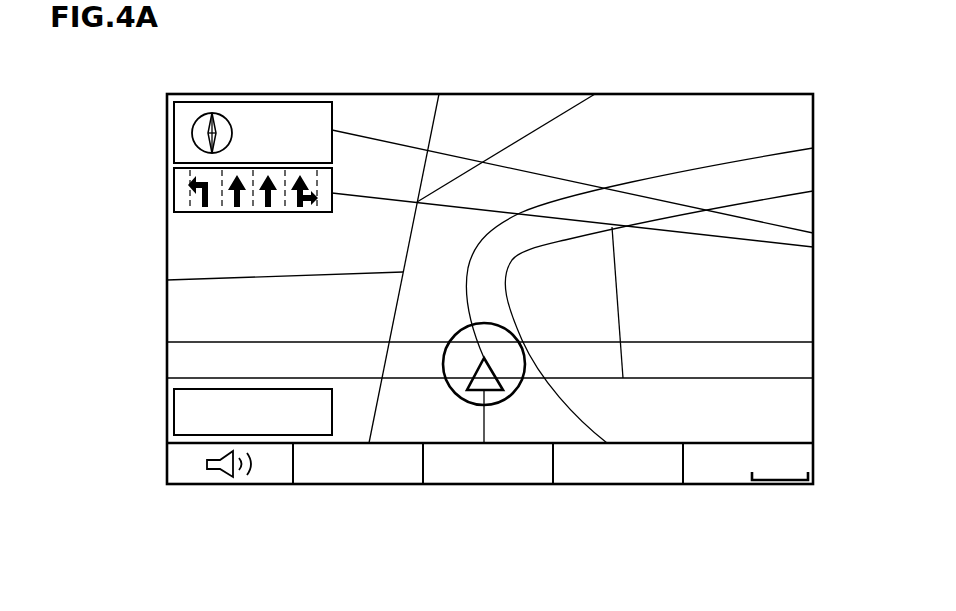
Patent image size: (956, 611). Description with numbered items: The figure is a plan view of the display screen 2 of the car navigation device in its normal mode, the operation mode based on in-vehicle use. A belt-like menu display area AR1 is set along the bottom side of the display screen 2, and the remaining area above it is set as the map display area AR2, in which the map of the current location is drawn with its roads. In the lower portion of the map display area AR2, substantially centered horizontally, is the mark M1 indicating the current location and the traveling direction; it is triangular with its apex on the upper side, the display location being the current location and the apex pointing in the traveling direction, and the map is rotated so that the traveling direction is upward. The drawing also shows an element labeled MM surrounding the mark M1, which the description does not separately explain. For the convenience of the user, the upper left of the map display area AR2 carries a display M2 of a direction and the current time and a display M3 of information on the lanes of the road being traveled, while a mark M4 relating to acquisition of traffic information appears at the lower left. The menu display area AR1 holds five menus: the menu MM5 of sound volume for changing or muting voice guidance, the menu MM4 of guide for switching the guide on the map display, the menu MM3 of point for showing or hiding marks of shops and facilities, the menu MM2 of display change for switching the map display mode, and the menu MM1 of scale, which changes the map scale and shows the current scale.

The display screen 2 is at (612, 94).
The map display area AR2 is at (823, 94).
The menu display area AR1 is at (823, 443).
The display of a direction and a current time M2 is at (174, 131).
The display of information on lanes M3 is at (174, 189).
The mark relating to acquisition of traffic information M4 is at (174, 409).
The mark indicating the current location and the traveling direction M1 is at (477, 366).
The own vehicle mark circle MM is at (445, 384).
The menu of sound volume MM5 is at (220, 485).
The menu of guide MM4 is at (353, 485).
The menu of point MM3 is at (487, 485).
The menu of display change MM2 is at (575, 485).
The menu of scale MM1 is at (712, 485).